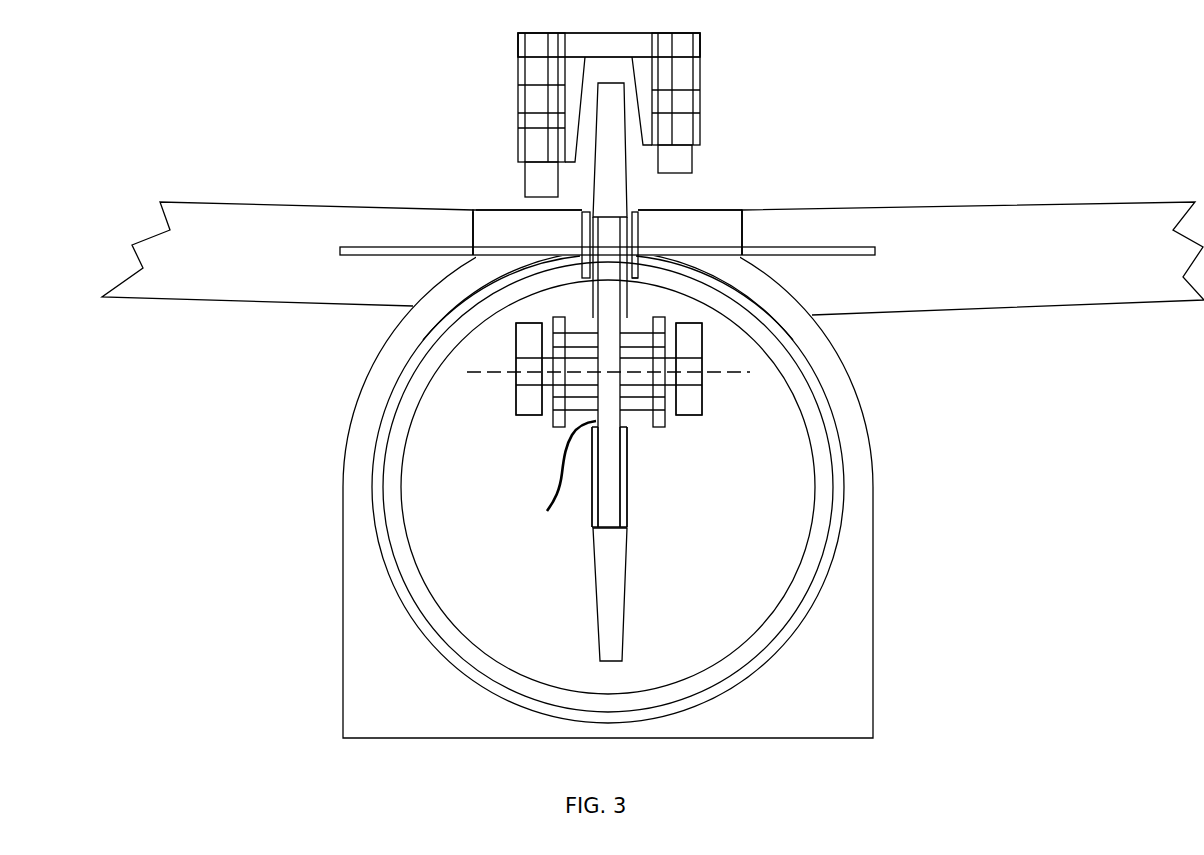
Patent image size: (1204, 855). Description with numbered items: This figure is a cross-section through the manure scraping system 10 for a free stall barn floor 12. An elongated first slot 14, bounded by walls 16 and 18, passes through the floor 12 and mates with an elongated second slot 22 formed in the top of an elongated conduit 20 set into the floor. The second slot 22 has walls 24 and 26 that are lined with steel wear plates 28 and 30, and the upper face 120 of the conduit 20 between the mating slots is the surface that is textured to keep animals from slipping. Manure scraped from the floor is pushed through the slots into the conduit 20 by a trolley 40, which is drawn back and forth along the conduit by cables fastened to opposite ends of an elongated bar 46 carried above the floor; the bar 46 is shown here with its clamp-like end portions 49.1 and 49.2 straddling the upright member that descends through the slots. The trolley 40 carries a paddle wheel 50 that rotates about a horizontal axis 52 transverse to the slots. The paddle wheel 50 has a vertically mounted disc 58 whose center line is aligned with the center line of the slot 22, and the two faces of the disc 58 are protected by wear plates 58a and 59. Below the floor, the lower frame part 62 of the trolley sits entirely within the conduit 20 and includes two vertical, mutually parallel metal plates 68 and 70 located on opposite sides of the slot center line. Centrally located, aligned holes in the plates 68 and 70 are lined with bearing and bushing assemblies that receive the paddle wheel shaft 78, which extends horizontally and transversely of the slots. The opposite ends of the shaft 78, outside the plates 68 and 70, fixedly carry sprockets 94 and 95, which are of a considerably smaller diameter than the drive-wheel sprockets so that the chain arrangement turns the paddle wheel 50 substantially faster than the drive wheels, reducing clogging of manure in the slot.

The system 10 is at (418, 68).
The free stall barn floor 12 is at (1107, 215).
The elongated first slot 14 is at (476, 200).
The wall 16 is at (473, 222).
The wall 18 is at (745, 232).
The elongated conduit 20 is at (863, 415).
The elongated second slot 22 is at (632, 279).
The wall 24 is at (532, 219).
The wall 26 is at (638, 234).
The steel wear plate 28 is at (483, 274).
The steel wear plate 30 is at (703, 277).
The trolley 40 is at (630, 511).
The elongated bar 46 is at (622, 42).
The clamp jaw 49.1 is at (522, 70).
The clamp jaw 49.2 is at (693, 77).
The paddle wheel 50 is at (612, 128).
The horizontal axis 52 is at (491, 376).
The disc 58 is at (547, 511).
The wear plate 58a is at (593, 493).
The wear plate 59 is at (628, 487).
The lower frame part 62 is at (652, 428).
The metal plate 68 is at (556, 428).
The metal plate 70 is at (665, 418).
The paddle wheel shaft 78 is at (678, 373).
The sprocket 94 is at (526, 403).
The sprocket 95 is at (692, 403).
The upper face 120 is at (718, 212).